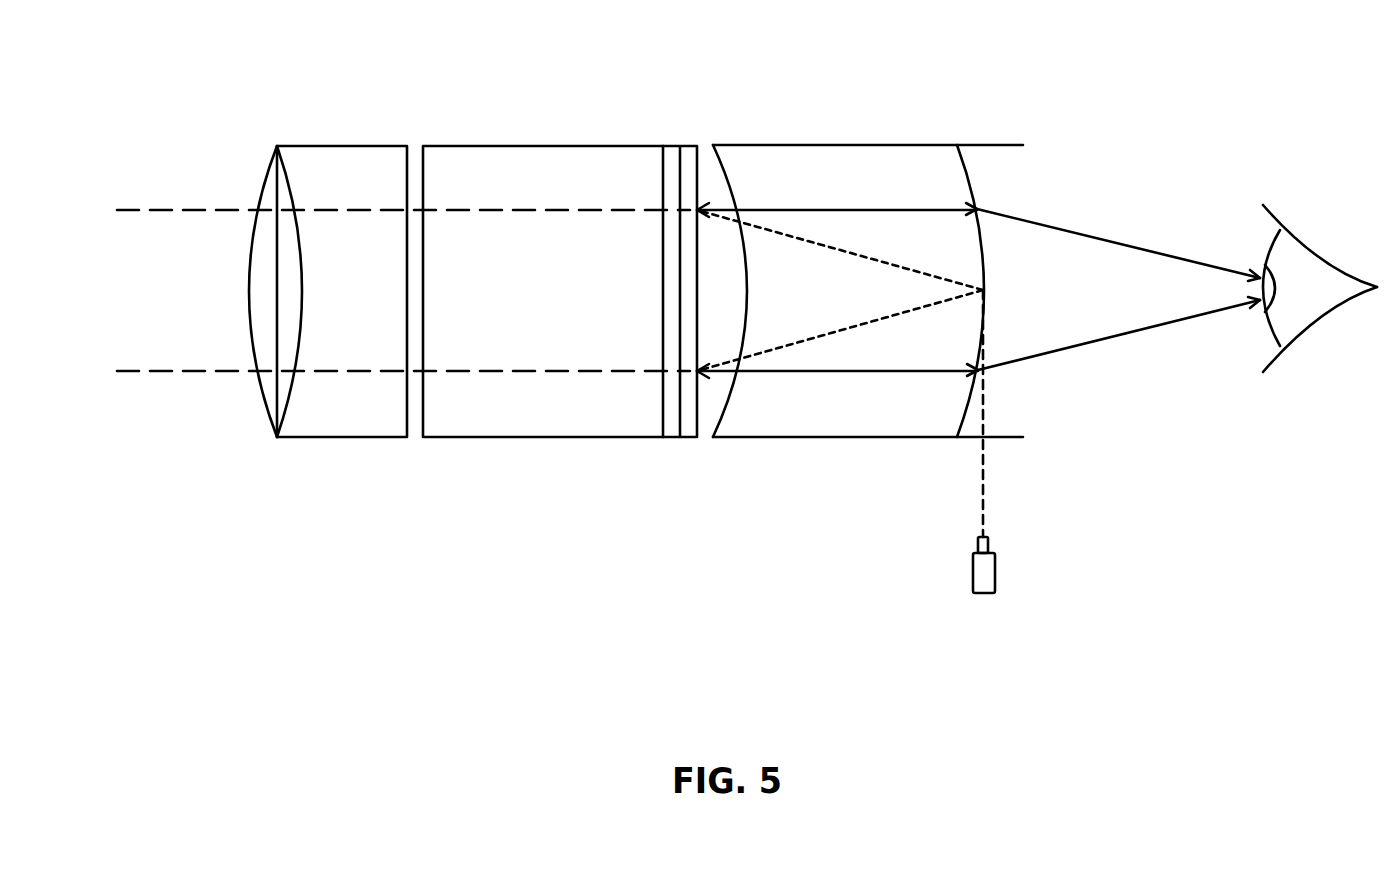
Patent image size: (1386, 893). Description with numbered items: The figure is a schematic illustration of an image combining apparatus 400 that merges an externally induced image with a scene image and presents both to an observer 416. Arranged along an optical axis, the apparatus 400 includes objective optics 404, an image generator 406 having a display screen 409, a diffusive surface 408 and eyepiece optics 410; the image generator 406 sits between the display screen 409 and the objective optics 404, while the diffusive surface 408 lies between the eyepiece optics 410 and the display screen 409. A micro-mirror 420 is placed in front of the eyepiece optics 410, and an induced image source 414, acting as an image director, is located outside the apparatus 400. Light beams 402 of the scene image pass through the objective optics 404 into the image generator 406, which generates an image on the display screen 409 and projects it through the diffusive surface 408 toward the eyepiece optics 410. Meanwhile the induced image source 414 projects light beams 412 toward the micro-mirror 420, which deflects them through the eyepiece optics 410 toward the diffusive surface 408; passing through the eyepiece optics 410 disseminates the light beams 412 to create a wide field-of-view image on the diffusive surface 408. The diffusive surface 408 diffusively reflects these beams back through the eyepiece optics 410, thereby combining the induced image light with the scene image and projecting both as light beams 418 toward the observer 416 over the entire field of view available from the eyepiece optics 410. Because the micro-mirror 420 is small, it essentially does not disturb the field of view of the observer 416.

The image combining apparatus 400 is at (443, 568).
The light beams 402 is at (188, 211).
The objective optics 404 is at (342, 438).
The image generator 406 is at (572, 438).
The diffusive surface 408 is at (687, 440).
The display screen 409 is at (673, 153).
The eyepiece optics 410 is at (904, 307).
The light beams 412 is at (923, 268).
The induced image source 414 is at (997, 572).
The observer 416 is at (1337, 305).
The light beams 418 is at (750, 207).
The micro-mirror 420 is at (992, 295).